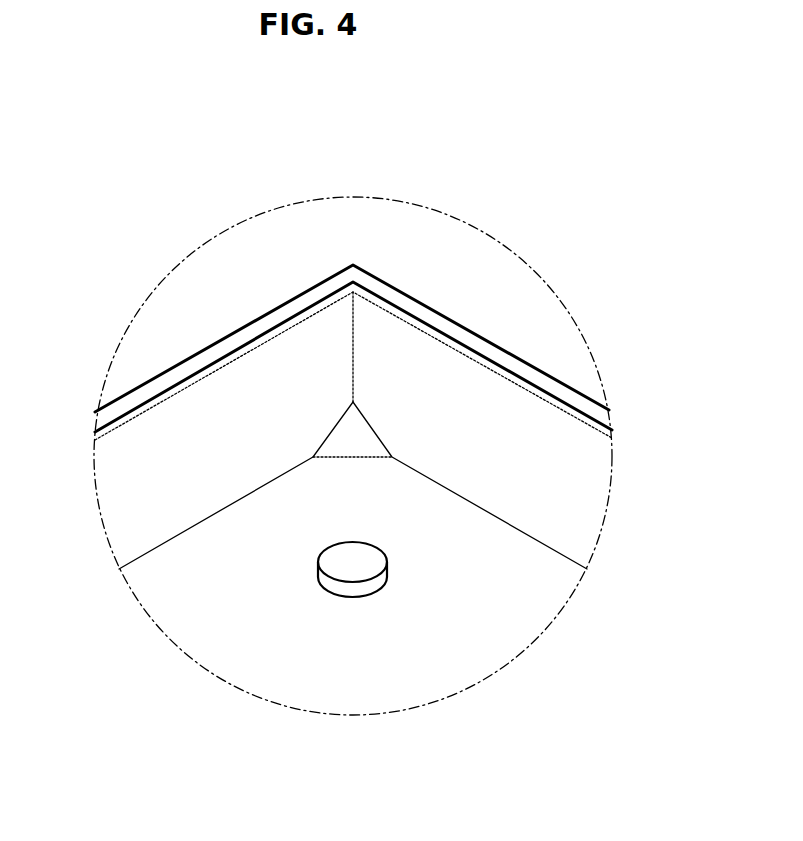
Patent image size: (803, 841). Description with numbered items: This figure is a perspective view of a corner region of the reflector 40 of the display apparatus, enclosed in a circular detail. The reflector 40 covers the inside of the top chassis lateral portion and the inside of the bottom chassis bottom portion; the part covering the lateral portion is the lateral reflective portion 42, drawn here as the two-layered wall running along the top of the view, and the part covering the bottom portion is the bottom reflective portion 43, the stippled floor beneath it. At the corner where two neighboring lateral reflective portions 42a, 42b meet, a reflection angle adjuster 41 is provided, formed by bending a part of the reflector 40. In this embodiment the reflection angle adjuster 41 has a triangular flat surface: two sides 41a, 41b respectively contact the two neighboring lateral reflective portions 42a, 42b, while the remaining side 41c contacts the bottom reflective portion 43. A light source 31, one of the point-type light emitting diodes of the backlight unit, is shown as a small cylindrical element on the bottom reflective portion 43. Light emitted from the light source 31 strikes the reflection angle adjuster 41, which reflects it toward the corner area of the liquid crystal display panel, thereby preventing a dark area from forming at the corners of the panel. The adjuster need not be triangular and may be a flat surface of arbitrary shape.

The reflector 40 is at (518, 638).
The reflection angle adjuster 41 is at (352, 401).
The side of reflection angle adjuster 41a is at (328, 430).
The side of reflection angle adjuster 41b is at (380, 430).
The remaining side of reflection angle adjuster 41c is at (355, 393).
The lateral reflective portion 42 is at (353, 266).
The lateral reflective portion 42a is at (287, 343).
The lateral reflective portion 42b is at (385, 347).
The bottom reflective portion 43 is at (363, 673).
The light source 31 is at (318, 566).